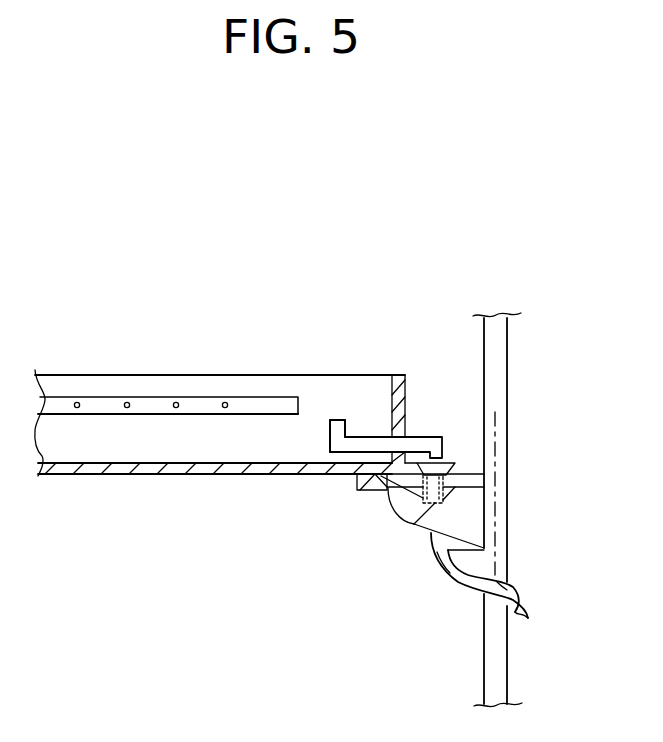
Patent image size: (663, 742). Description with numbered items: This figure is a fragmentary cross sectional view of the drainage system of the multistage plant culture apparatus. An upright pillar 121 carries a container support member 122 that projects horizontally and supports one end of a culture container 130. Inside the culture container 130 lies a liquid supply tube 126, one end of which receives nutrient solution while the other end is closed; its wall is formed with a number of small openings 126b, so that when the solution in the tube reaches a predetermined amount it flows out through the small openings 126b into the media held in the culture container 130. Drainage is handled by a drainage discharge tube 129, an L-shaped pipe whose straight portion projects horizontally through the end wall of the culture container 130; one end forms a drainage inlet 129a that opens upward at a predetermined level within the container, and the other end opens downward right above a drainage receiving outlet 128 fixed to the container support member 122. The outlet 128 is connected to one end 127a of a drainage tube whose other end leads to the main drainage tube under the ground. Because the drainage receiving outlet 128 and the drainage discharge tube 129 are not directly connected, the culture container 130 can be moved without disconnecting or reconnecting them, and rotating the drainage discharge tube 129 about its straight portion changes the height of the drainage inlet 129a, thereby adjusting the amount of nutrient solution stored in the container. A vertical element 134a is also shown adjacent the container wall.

The pillar 121 is at (497, 402).
The container support member 122 is at (365, 491).
The liquid supply tube 126 is at (148, 397).
The small openings 126b is at (78, 414).
The end of drainage tube 127a is at (431, 543).
The drainage receiving outlet 128 is at (443, 462).
The drainage discharge tube 129 is at (373, 427).
The drainage inlet 129a is at (322, 421).
The culture container 130 is at (316, 378).
The vertical rib 134a is at (405, 396).